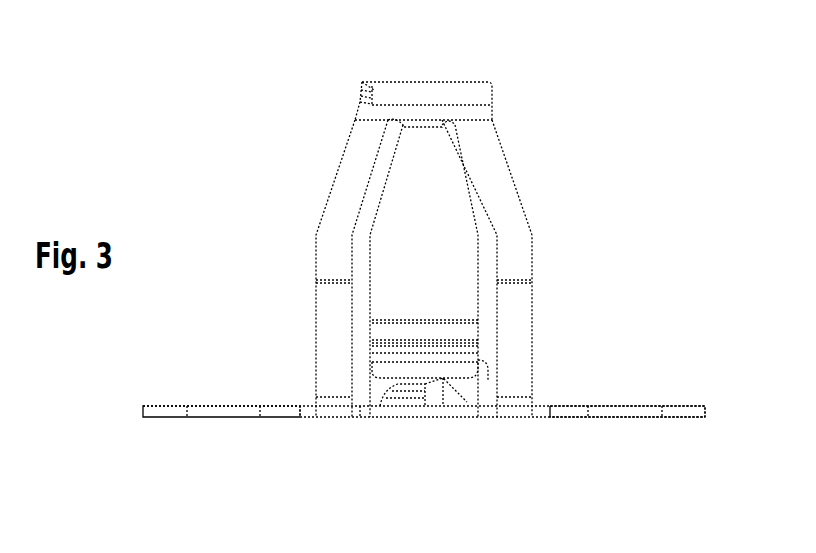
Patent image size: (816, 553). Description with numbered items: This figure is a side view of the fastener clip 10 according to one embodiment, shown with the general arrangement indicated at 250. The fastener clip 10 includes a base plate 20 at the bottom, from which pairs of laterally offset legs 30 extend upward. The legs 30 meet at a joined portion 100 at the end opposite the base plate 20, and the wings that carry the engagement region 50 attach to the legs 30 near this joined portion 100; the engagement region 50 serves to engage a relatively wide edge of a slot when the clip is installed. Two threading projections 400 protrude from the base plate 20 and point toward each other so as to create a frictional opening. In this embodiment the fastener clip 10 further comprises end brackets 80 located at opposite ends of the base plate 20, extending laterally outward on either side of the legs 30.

The fastener clip 10 is at (122, 68).
The clip 250 is at (553, 47).
The joined portion 100 is at (430, 97).
The laterally offset legs 30 is at (335, 235).
The engagement region 50 is at (457, 368).
The threading projections 400 is at (493, 397).
The base plate 20 is at (430, 413).
The end brackets 80 is at (205, 413).